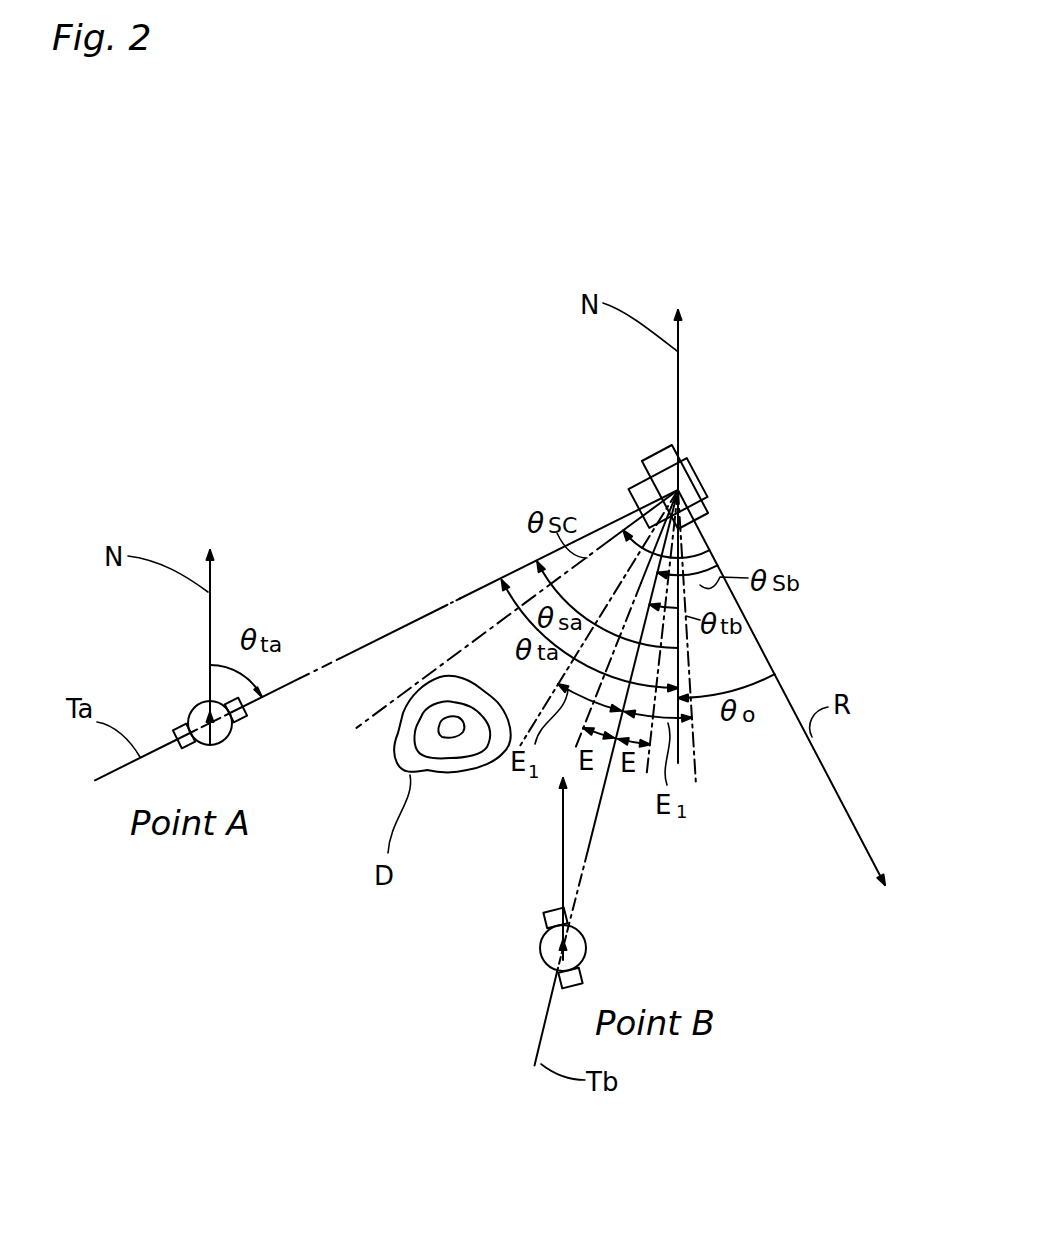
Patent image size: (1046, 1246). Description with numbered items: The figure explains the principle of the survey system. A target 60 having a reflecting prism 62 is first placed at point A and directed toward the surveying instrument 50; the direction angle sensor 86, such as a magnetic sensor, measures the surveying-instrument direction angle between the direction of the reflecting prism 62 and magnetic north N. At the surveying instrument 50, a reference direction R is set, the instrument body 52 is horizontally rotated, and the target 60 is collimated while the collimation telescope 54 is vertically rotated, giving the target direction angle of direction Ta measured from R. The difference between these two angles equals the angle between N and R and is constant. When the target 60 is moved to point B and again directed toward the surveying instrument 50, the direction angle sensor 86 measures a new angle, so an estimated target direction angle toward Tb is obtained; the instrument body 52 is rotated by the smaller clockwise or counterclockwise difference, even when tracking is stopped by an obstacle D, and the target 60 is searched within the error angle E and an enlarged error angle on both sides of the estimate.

The surveying instrument 50 is at (641, 443).
The instrument body 52 is at (653, 450).
The collimation telescope 54 is at (633, 496).
The target 60 is at (390, 811).
The reflecting prism 62 is at (245, 713).
The direction angle sensor 86 is at (235, 738).